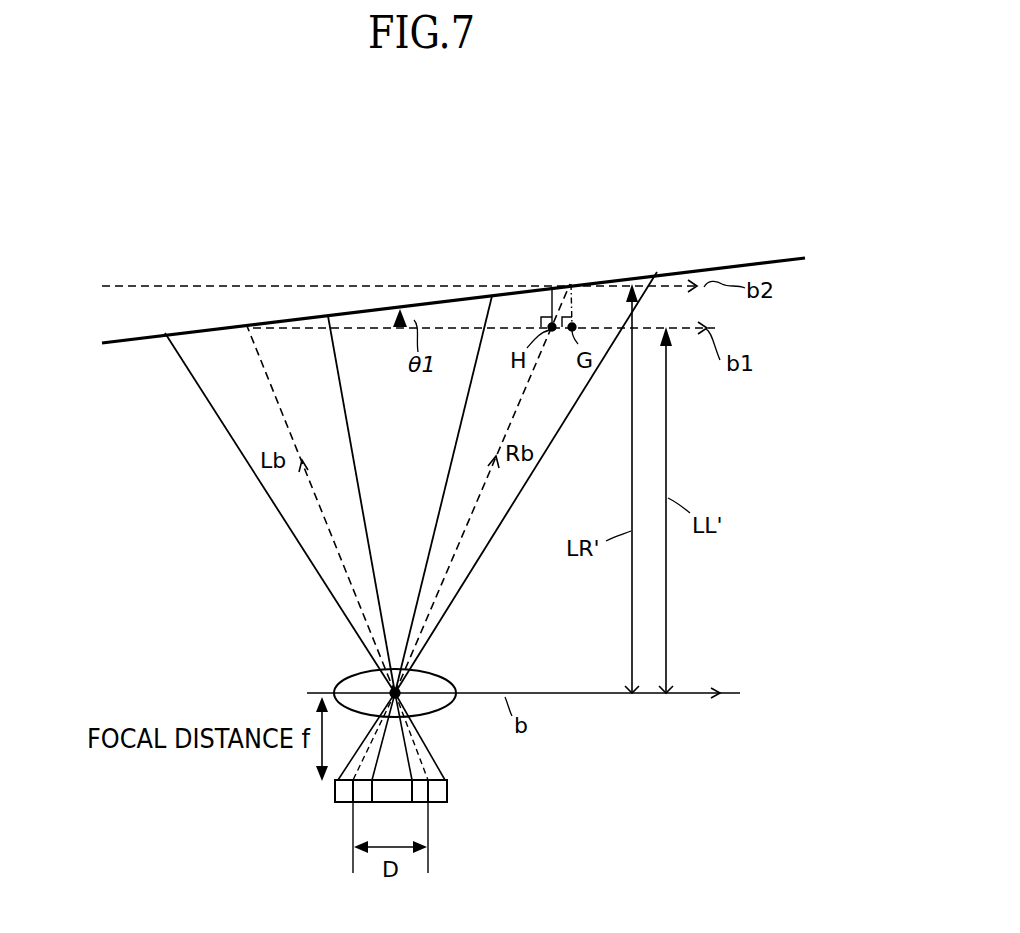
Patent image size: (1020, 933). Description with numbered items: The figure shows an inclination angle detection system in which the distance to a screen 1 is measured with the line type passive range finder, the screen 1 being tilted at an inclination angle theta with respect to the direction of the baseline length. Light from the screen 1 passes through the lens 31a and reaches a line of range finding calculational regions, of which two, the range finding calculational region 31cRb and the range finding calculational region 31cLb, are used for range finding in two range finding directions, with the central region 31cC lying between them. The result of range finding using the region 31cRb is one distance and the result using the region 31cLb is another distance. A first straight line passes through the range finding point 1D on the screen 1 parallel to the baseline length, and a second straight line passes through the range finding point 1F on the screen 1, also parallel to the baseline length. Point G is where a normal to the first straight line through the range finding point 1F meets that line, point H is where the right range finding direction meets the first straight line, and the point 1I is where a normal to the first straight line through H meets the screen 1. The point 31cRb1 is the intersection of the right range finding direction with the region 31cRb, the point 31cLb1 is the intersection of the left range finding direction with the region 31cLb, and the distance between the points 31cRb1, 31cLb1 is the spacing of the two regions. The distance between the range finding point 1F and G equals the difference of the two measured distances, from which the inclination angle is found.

The screen 1 is at (749, 263).
The range finding point 1D is at (248, 323).
The range finding point 1F is at (572, 285).
The intersection point 1I is at (549, 293).
The lens 31a is at (334, 681).
The intersection point 31cRb1 is at (347, 785).
The range finding calculational region 31cRb is at (344, 806).
The range finding calculational region 31cC is at (397, 805).
The range finding calculational region 31cLb is at (438, 804).
The intersection point 31cLb1 is at (438, 782).